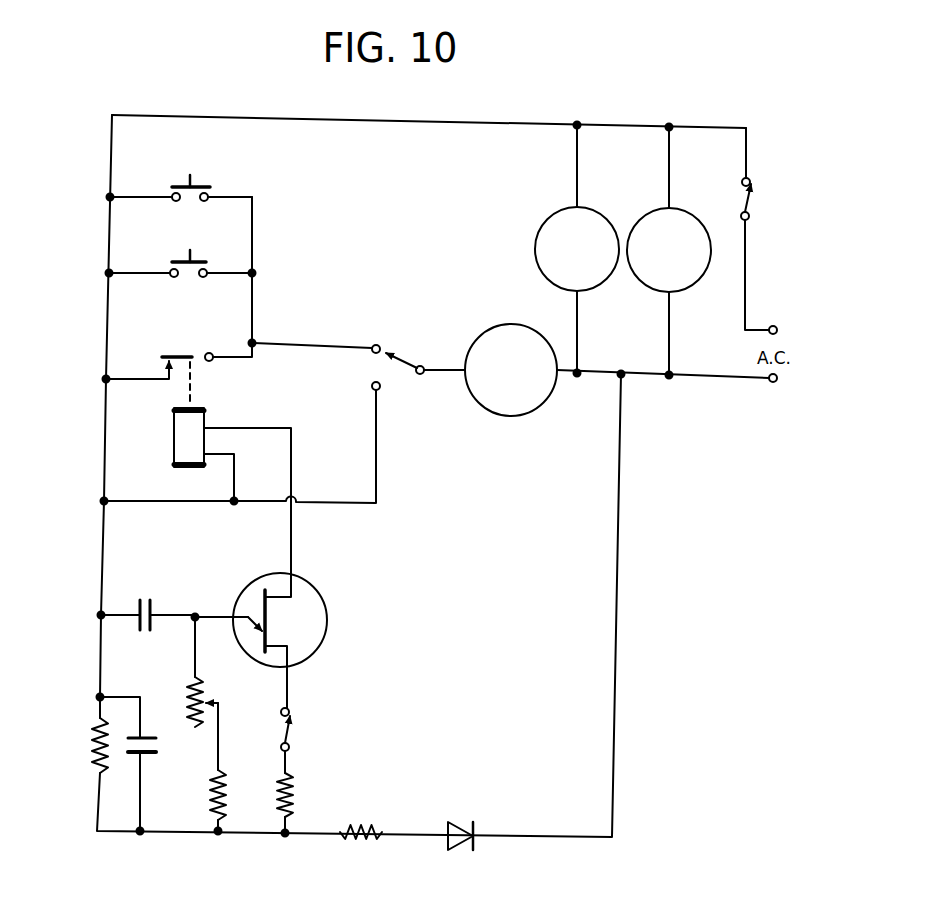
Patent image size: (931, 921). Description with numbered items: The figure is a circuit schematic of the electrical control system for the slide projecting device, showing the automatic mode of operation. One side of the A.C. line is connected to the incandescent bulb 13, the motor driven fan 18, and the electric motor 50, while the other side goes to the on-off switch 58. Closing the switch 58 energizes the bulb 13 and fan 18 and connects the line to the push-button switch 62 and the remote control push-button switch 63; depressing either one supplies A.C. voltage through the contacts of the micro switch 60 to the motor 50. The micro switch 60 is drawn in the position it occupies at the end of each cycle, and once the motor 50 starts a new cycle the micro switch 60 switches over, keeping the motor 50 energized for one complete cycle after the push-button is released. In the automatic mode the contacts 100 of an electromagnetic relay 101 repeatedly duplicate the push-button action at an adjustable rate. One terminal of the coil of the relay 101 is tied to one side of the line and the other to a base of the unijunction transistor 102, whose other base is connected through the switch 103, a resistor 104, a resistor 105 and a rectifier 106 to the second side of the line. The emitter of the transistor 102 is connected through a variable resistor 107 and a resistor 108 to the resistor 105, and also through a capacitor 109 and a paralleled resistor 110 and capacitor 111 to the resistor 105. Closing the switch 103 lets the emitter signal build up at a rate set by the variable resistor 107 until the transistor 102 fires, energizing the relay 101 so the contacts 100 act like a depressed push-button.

The incandescent bulb 13 is at (655, 262).
The motor driven fan 18 is at (563, 261).
The electric motor 50 is at (497, 381).
The on-off switch 58 is at (753, 200).
The micro switch 60 is at (399, 348).
The push-button switch 62 is at (196, 257).
The remote control push-button switch 63 is at (203, 182).
The contacts 100 is at (188, 352).
The electromagnetic relay 101 is at (174, 440).
The unijunction transistor 102 is at (323, 601).
The switch 103 is at (296, 730).
The resistor 104 is at (296, 800).
The resistor 105 is at (359, 842).
The rectifier 106 is at (477, 792).
The variable resistor 107 is at (204, 684).
The resistor 108 is at (209, 805).
The capacitor 109 is at (151, 599).
The resistor 110 is at (91, 745).
The capacitor 111 is at (157, 744).